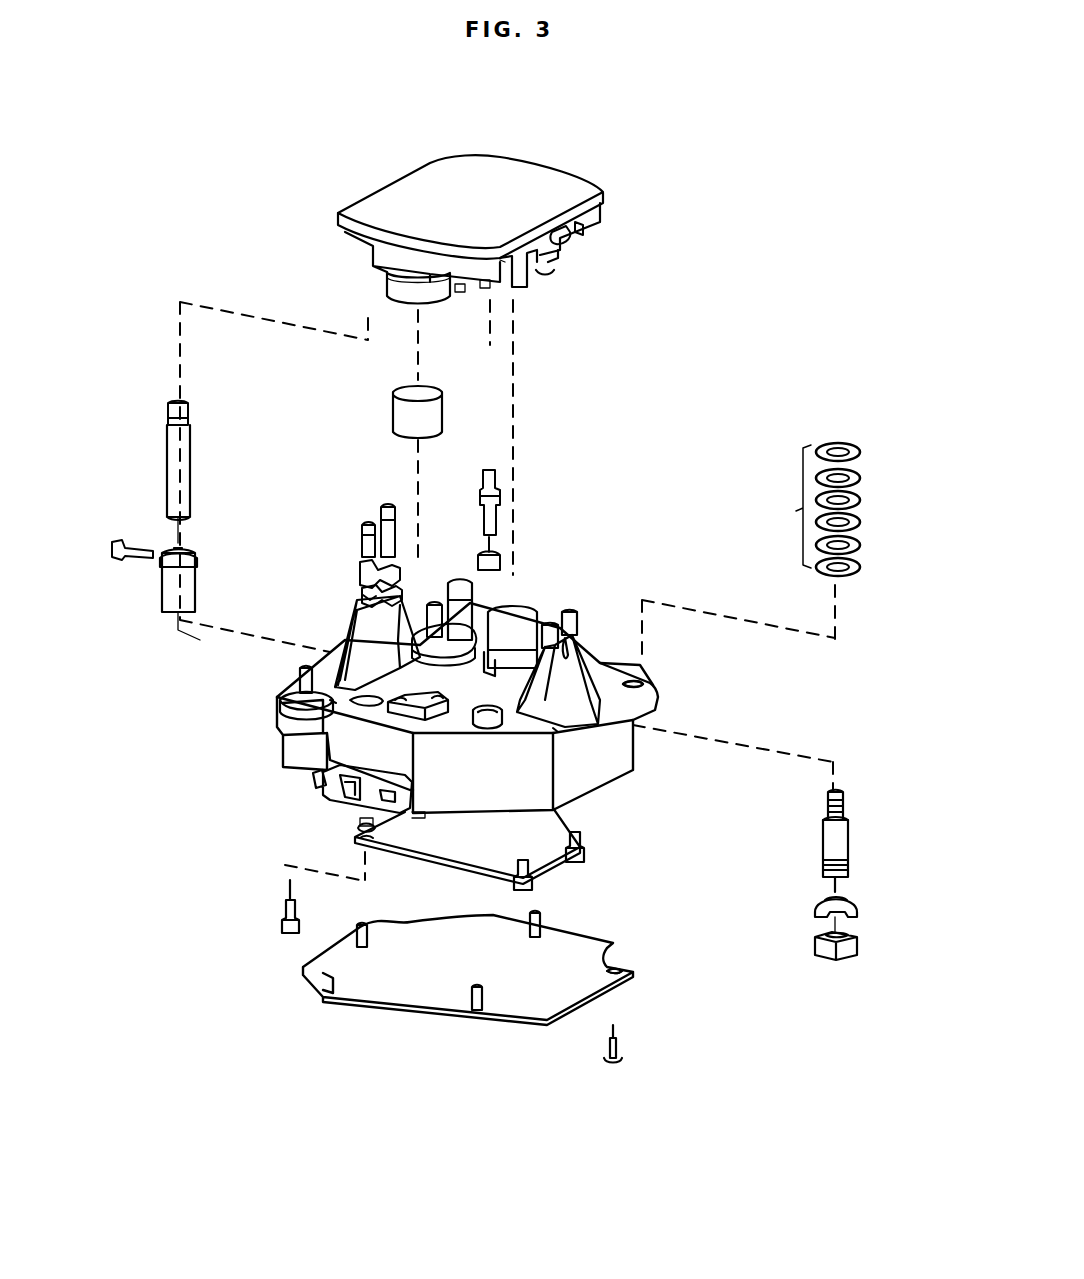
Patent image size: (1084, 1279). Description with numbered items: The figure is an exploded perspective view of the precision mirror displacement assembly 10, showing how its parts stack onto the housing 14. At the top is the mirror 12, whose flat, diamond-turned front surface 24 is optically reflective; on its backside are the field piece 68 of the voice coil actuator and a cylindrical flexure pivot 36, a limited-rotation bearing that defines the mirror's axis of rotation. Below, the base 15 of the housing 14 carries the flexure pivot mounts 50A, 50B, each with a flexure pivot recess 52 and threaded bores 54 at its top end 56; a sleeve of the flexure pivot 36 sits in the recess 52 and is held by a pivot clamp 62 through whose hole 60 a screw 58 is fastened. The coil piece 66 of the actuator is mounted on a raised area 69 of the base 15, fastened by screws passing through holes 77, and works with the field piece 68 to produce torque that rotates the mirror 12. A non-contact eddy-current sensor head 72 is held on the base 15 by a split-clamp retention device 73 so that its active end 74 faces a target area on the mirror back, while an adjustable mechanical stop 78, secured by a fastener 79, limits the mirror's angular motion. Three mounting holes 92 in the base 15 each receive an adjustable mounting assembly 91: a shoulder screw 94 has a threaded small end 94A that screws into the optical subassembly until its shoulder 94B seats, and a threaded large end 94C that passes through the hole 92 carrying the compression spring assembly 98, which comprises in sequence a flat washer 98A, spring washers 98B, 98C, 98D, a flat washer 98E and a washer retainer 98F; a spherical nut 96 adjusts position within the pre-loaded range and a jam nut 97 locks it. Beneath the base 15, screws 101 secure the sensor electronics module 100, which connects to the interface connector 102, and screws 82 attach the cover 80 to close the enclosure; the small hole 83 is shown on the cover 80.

The precision mirror displacement assembly 10 is at (318, 120).
The mirror 12 is at (540, 160).
The housing 14 is at (642, 708).
The base 15 is at (335, 702).
The front surface 24 is at (486, 170).
The flexure pivot 36 is at (577, 205).
The flexure pivot mount 50A is at (365, 631).
The flexure pivot mount 50B is at (573, 648).
The flexure pivot recess 52 is at (370, 592).
The threaded bore 54 is at (362, 601).
The top end 56 is at (340, 646).
The screw 58 is at (366, 528).
The hole 60 is at (389, 520).
The pivot clamp 62 is at (368, 562).
The coil piece 66 is at (432, 408).
The field piece 68 is at (388, 287).
The raised area 69 is at (440, 722).
The sensor head 72 is at (168, 463).
The retention device 73 is at (155, 575).
The active end 74 is at (175, 400).
The hole 77 is at (428, 708).
The adjustable mechanical stop 78 is at (500, 470).
The fastener 79 is at (490, 553).
The cover 80 is at (618, 992).
The screw 82 is at (607, 1057).
The hole 83 is at (618, 968).
The adjustable mounting assembly 91 is at (435, 598).
The mounting hole 92 is at (645, 681).
The shoulder screw 94 is at (828, 848).
The threaded small end 94A is at (845, 794).
The shoulder 94B is at (848, 820).
The threaded large end 94C is at (840, 850).
The spherical nut 96 is at (840, 905).
The jam nut 97 is at (858, 945).
The adjustable compression spring assembly 98 is at (796, 511).
The flat washer 98A is at (860, 570).
The spring washer 98B is at (860, 548).
The spring washer 98C is at (858, 522).
The spring washer 98D is at (858, 500).
The flat washer 98E is at (856, 478).
The washer retainer 98F is at (852, 450).
The sensor electronics module 100 is at (357, 840).
The screw 101 is at (585, 860).
The interface connector 102 is at (335, 810).